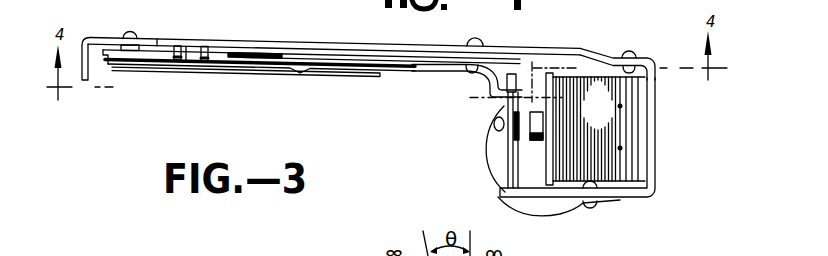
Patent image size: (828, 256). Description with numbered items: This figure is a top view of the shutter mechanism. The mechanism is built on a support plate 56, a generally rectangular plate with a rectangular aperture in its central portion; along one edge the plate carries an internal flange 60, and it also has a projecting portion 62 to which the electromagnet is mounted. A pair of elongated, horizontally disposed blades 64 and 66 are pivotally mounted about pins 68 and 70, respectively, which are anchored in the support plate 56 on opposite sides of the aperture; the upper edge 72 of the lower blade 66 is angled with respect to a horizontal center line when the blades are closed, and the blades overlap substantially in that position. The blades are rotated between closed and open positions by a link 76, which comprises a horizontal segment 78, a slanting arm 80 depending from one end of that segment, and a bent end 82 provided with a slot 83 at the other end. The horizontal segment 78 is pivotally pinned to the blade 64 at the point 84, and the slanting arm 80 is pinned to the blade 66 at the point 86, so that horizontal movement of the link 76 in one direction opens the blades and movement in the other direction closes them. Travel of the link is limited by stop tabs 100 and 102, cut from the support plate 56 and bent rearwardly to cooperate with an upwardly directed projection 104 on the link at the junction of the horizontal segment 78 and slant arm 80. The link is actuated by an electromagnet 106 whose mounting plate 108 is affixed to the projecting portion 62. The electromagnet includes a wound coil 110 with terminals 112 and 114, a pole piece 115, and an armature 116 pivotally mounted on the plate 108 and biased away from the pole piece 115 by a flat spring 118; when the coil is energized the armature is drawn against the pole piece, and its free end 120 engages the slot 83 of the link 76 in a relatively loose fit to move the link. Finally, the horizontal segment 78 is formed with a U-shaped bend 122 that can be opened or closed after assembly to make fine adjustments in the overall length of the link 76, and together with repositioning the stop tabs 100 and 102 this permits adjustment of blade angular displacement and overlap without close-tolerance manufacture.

The support plate 56 is at (308, 42).
The internal flange 60 is at (80, 72).
The projecting portion 62 is at (583, 47).
The upper blade 64 is at (412, 64).
The lower blade 66 is at (201, 70).
The pin 68 is at (480, 88).
The pin 70 is at (136, 72).
The upper edge of lower blade 72 is at (242, 74).
The link 76 is at (240, 47).
The horizontal segment 78 is at (276, 49).
The slanting arm 80 is at (166, 68).
The bent end 82 is at (500, 96).
The slot 83 is at (523, 78).
The pivot point 84 is at (467, 71).
The pivot point 86 is at (128, 72).
The stop tab 100 is at (157, 40).
The stop tab 102 is at (229, 51).
The upwardly directed projection 104 is at (190, 44).
The electromagnet 106 is at (610, 182).
The mounting plate 108 is at (655, 168).
The wound coil 110 is at (632, 128).
The terminal 112 is at (620, 106).
The terminal 114 is at (620, 148).
The pole piece 115 is at (537, 142).
The armature 116 is at (512, 132).
The flat spring 118 is at (553, 213).
The free end of armature 120 is at (472, 42).
The U-shaped bend 122 is at (301, 73).